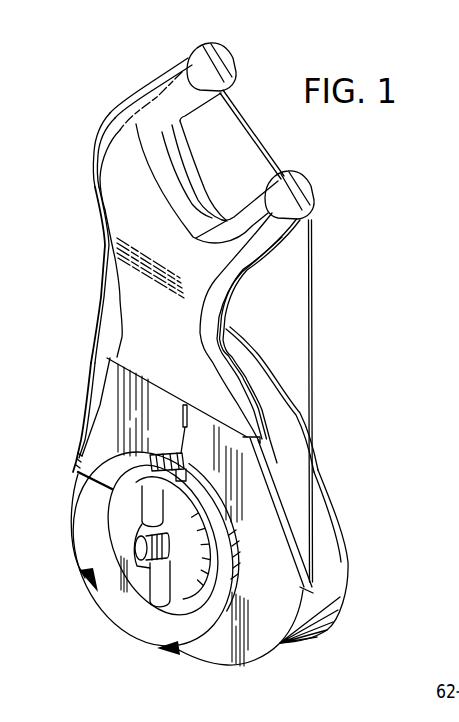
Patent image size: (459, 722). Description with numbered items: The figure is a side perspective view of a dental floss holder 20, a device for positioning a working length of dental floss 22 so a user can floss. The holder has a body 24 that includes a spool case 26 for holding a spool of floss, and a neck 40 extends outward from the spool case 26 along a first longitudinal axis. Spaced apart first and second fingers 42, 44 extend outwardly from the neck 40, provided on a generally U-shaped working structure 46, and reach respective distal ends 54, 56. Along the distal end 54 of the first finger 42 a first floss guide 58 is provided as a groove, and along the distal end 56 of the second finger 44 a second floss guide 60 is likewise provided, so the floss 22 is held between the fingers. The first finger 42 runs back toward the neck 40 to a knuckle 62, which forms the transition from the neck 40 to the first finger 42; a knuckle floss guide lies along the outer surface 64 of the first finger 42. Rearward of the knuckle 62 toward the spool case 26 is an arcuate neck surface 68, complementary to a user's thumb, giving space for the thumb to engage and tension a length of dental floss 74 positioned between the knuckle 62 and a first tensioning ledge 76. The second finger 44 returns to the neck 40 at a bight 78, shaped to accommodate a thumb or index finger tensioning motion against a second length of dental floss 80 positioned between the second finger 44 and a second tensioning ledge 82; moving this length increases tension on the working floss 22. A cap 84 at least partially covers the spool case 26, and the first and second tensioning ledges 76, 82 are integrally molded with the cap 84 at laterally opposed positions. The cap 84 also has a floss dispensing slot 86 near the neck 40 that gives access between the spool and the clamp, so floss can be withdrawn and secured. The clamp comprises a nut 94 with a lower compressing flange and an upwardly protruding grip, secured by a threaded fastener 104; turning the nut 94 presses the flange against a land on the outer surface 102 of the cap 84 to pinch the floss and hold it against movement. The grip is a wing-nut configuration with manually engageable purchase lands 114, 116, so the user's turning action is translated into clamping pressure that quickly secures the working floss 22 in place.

The dental floss holder 20 is at (352, 295).
The dental floss 22 is at (274, 158).
The body 24 is at (302, 413).
The spool case 26 is at (344, 550).
The neck 40 is at (172, 353).
The first finger 42 is at (200, 110).
The second finger 44 is at (276, 250).
The U-shaped working structure 46 is at (211, 188).
The distal end of first finger 54 is at (234, 48).
The distal end of second finger 56 is at (310, 187).
The first floss guide 58 is at (222, 44).
The second floss guide 60 is at (316, 198).
The knuckle 62 is at (90, 162).
The outer surface of first finger 64 is at (144, 90).
The arcuate neck surface 68 is at (113, 318).
The length of dental floss 74 is at (89, 387).
The first tensioning ledge 76 is at (78, 472).
The bight 78 is at (230, 327).
The second length of dental floss 80 is at (311, 357).
The second tensioning ledge 82 is at (320, 620).
The cap 84 is at (296, 622).
The floss dispensing slot 86 is at (183, 412).
The nut 94 is at (138, 570).
The outer surface of cap 102 is at (287, 610).
The threaded fastener 104 is at (137, 549).
The purchase land 114 is at (155, 598).
The purchase land 116 is at (142, 490).